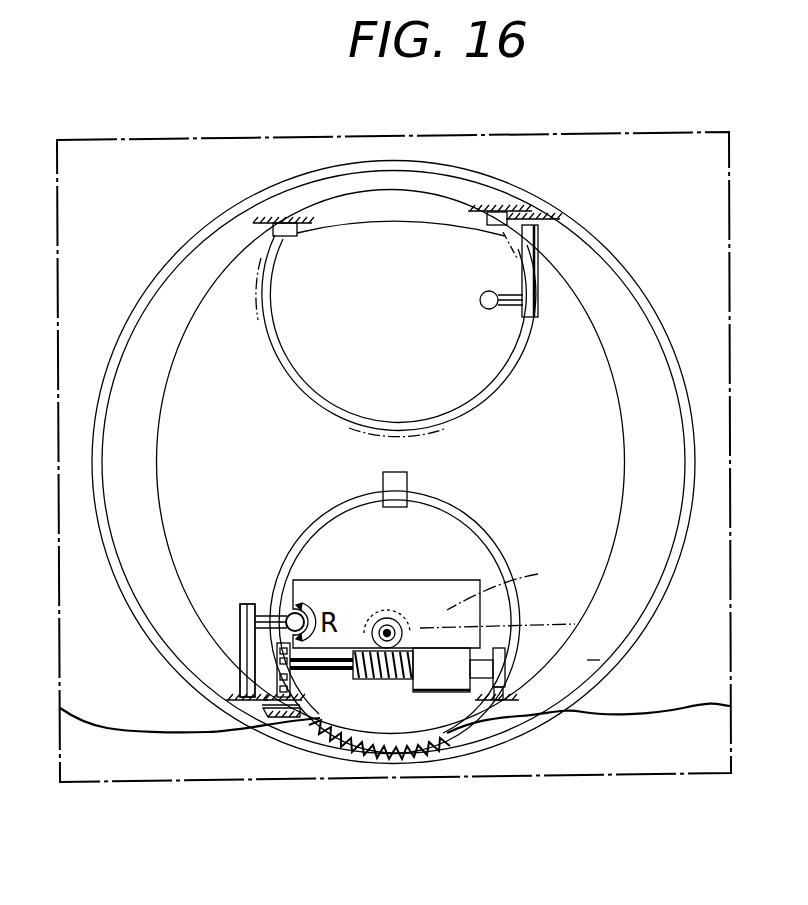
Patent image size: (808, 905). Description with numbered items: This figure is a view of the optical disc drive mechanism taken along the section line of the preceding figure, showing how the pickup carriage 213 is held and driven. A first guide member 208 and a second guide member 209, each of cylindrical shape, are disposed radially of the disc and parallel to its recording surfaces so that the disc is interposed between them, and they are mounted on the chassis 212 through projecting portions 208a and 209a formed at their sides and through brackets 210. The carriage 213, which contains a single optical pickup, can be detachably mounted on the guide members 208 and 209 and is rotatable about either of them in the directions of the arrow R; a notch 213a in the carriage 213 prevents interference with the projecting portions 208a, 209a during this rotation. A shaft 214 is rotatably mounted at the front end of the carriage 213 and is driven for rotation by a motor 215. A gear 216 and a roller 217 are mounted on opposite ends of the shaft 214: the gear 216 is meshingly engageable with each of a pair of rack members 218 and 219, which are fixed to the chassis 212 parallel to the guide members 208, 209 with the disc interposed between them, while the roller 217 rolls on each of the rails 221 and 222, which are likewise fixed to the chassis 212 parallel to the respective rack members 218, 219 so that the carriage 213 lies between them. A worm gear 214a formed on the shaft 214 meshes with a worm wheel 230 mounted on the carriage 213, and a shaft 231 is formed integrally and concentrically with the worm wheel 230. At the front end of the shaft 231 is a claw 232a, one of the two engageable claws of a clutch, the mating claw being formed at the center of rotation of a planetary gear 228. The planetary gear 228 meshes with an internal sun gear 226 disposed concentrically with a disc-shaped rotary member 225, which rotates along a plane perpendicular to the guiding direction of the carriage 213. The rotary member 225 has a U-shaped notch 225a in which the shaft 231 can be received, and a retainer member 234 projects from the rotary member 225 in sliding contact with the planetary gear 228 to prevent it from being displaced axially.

The first guide member 208 is at (528, 338).
The projecting portion 208a is at (496, 311).
The second guide member 209 is at (289, 606).
The projecting portion 209a is at (270, 610).
The bracket 210 is at (538, 248).
The chassis 212 is at (262, 216).
The carriage 213 is at (463, 590).
The notch 213a is at (240, 648).
The shaft 214 is at (325, 672).
The worm gear 214a is at (365, 685).
The motor 215 is at (462, 700).
The gear 216 is at (312, 722).
The roller 217 is at (587, 660).
The rack member 218 is at (497, 208).
The rack member 219 is at (290, 720).
The rail 221 is at (270, 228).
The rail 222 is at (517, 685).
The rotary member 225 is at (692, 414).
The U-shaped notch 225a is at (433, 752).
The internal sun gear 226 is at (418, 757).
The planetary gear 228 is at (389, 682).
The worm wheel 230 is at (515, 584).
The shaft 231 is at (520, 621).
The claw 232a is at (387, 630).
The retainer member 234 is at (410, 478).